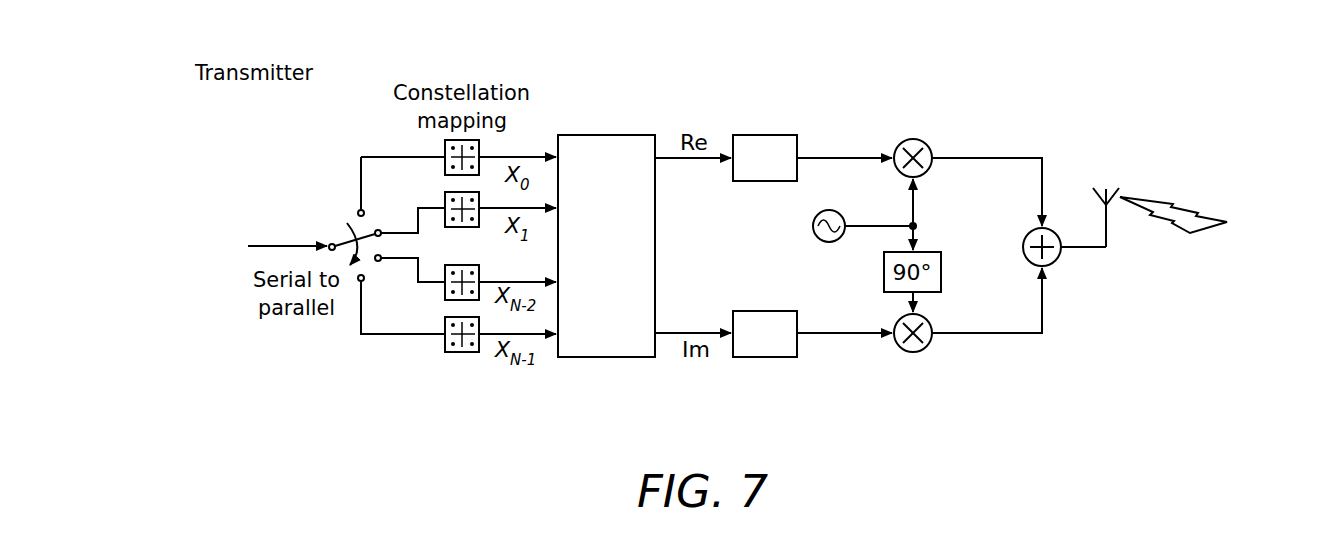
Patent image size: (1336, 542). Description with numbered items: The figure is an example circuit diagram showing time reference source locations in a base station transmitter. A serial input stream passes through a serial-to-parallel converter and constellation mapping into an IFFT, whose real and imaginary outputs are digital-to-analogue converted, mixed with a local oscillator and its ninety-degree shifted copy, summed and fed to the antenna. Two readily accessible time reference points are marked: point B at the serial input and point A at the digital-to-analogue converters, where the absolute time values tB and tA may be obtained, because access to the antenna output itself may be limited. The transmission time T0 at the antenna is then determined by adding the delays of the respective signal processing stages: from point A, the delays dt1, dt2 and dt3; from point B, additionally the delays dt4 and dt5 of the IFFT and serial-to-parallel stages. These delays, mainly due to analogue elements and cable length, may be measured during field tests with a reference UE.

The time reference point B is at (268, 230).
The processing stage delay dt5 is at (222, 274).
The processing stage delay dt4 is at (600, 363).
The processing stage delay dt3 is at (766, 363).
The processing stage delay dt2 is at (910, 363).
The processing stage delay dt1 is at (1087, 284).
The time reference point A is at (749, 189).
The physical transmission time T0 is at (1102, 180).